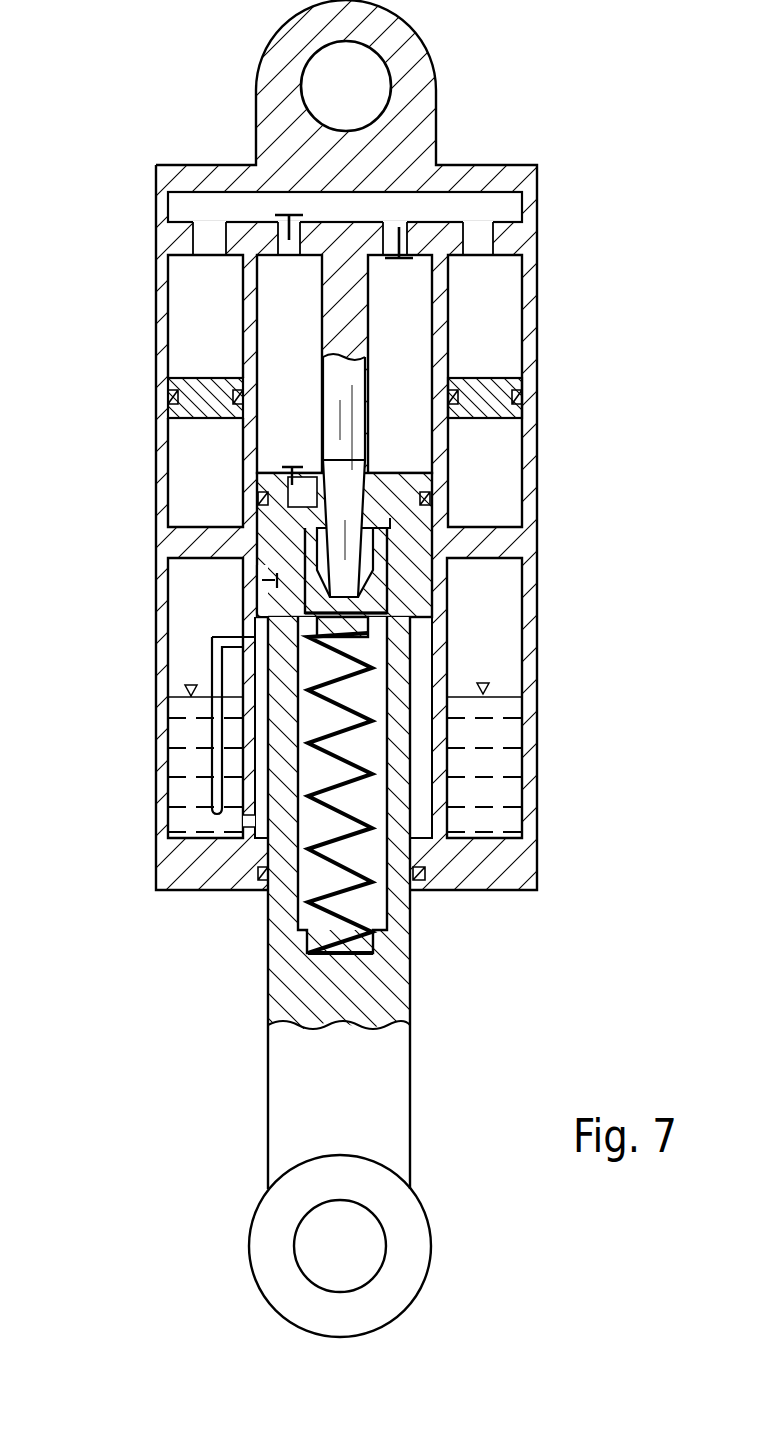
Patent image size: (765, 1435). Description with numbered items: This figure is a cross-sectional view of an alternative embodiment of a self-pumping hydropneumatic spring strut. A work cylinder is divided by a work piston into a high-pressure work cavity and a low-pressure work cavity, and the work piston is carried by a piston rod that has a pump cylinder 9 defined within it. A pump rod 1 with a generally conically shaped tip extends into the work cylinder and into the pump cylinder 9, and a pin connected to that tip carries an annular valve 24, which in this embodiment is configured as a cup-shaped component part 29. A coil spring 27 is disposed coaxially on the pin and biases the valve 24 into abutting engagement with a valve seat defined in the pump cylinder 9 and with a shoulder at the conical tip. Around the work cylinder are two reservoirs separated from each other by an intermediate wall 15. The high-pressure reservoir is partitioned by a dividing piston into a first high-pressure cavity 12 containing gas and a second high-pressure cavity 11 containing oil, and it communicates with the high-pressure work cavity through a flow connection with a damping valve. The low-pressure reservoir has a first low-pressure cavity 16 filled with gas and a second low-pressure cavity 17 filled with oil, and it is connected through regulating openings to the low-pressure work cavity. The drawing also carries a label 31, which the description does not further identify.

The pump rod 1 is at (347, 387).
The pump cylinder 9 is at (357, 858).
The second high-pressure cavity 11 is at (193, 323).
The first high-pressure cavity 12 is at (203, 465).
The intermediate wall 15 is at (483, 542).
The first low-pressure cavity 16 is at (185, 584).
The second low-pressure cavity 17 is at (180, 758).
The annular valve 24 is at (362, 607).
The coil spring 27 is at (368, 712).
The cup-shaped component part 29 is at (365, 592).
The seal 31 is at (377, 530).